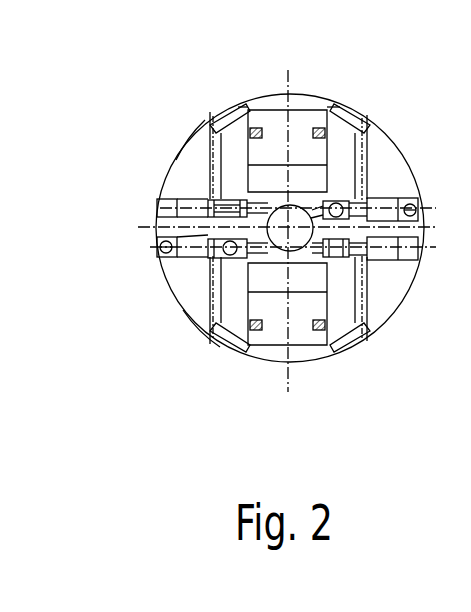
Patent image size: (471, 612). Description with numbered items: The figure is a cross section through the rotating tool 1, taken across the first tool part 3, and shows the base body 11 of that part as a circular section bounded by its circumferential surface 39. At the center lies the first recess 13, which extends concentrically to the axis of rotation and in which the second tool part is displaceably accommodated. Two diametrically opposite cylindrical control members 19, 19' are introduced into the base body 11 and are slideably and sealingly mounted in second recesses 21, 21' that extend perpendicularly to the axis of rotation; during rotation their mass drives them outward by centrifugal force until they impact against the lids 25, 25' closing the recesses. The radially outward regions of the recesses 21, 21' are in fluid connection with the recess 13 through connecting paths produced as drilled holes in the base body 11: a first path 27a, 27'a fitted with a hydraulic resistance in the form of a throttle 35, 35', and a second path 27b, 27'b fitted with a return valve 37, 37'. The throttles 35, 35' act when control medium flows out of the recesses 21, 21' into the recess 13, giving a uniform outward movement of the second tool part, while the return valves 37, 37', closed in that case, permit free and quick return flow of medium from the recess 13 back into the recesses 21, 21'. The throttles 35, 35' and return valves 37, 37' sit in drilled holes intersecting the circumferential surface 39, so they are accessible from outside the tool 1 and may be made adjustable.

The tool 1 is at (345, 92).
The first tool part 3 is at (146, 286).
The base body 11 is at (185, 308).
The first recess 13 is at (280, 243).
The control member 19 is at (278, 116).
The control member 19' is at (262, 372).
The second recess 21 is at (175, 126).
The second recess 21' is at (193, 355).
The lid 25 is at (301, 125).
The lid 25' is at (270, 352).
The first path 27a is at (207, 168).
The path 27b is at (367, 160).
The first path 27'a is at (392, 304).
The path 27'b is at (186, 341).
The throttle 35 is at (251, 189).
The throttle 35' is at (387, 274).
The return valve 37 is at (385, 174).
The return valve 37' is at (253, 242).
The circumferential surface 39 is at (168, 156).